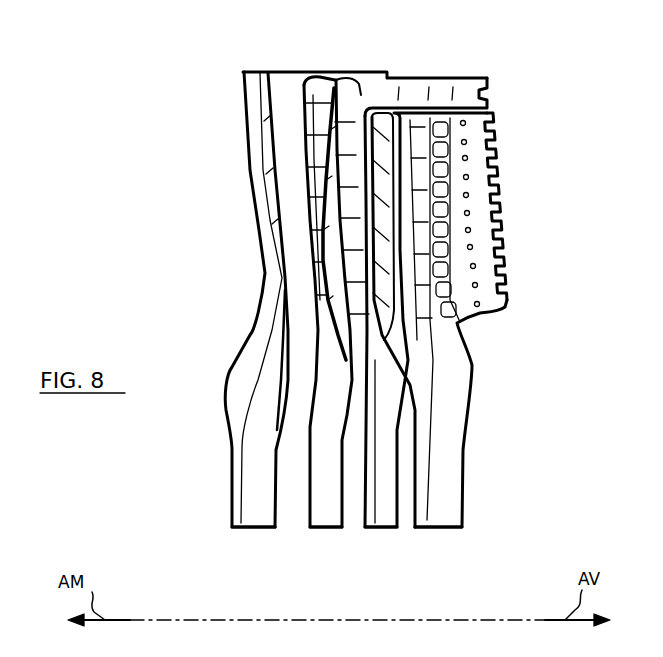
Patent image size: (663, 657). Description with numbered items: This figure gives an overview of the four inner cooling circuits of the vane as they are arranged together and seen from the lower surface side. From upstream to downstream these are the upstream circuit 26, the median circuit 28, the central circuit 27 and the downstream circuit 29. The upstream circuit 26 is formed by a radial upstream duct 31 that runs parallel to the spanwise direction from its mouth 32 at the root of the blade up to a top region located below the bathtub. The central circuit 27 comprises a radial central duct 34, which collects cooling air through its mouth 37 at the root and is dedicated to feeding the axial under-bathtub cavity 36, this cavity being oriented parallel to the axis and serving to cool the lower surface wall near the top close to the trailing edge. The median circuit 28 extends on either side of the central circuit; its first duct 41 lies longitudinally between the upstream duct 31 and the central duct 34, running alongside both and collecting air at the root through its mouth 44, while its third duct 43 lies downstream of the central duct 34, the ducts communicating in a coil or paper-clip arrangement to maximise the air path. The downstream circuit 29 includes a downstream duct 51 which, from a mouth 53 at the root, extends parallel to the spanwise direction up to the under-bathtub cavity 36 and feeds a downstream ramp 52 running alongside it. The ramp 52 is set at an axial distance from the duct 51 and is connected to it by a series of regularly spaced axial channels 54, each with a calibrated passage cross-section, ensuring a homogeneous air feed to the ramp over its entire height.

The upstream circuit 26 is at (237, 77).
The central circuit 27 is at (357, 72).
The median circuit 28 is at (298, 71).
The downstream circuit 29 is at (502, 118).
The radial upstream duct 31 is at (257, 103).
The mouth 32 is at (252, 532).
The radial central duct 34 is at (353, 210).
The axial under-bathtub cavity 36 is at (413, 88).
The mouth 37 is at (385, 538).
The first duct 41 is at (293, 150).
The third duct 43 is at (383, 253).
The mouth 44 is at (323, 540).
The downstream duct 51 is at (427, 303).
The downstream ramp 52 is at (487, 267).
The mouth 53 is at (447, 530).
The axial channels 54 is at (455, 250).